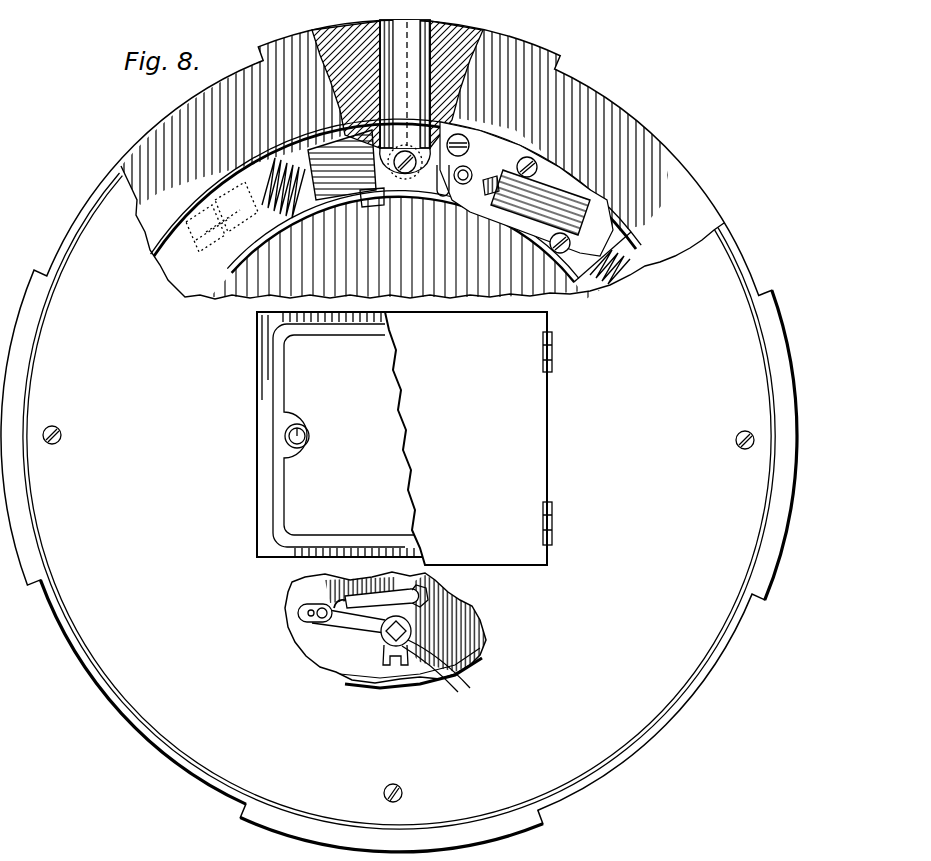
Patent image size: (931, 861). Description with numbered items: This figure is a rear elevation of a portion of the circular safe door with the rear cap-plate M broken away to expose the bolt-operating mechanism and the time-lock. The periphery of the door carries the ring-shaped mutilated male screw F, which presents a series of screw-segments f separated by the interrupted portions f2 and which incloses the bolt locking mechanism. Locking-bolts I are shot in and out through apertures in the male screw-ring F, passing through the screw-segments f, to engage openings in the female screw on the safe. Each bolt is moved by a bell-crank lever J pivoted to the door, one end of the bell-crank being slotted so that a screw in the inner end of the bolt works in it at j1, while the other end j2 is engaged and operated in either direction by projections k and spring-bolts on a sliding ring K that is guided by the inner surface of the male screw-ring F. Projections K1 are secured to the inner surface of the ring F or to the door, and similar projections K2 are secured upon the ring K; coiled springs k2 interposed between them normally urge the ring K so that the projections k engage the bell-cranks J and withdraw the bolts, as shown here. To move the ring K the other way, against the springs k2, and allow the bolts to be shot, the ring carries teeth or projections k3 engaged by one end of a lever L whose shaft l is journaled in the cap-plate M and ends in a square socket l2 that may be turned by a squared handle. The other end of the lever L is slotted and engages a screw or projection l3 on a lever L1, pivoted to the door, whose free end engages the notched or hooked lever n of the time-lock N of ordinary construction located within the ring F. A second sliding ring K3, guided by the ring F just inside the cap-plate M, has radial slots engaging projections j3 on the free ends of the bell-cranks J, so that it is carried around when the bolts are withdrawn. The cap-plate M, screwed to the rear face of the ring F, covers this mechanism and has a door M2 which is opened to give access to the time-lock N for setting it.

The screw-segments f is at (548, 72).
The interrupted portions f2 is at (135, 760).
The mutilated male screw F is at (422, 164).
The locking-bolts I is at (416, 101).
The bell-crank levers J is at (437, 162).
The slotted end connection j1 is at (400, 176).
The other ends of bell-cranks j2 is at (468, 178).
The projections j3 is at (462, 185).
The sliding ring K is at (546, 238).
The projections K1 is at (618, 238).
The projections K2 is at (318, 202).
The sliding ring K3 is at (217, 231).
The projections k is at (440, 172).
The coiled springs k2 is at (275, 170).
The teeth or projections k3 is at (400, 665).
The rear cap-plate M is at (301, 434).
The door M2 is at (468, 438).
The time-lock N is at (344, 435).
The lever L is at (358, 620).
The lever L1 is at (366, 603).
The shaft l is at (413, 643).
The square socket l2 is at (411, 631).
The screw or projection l3 is at (324, 616).
The lever of time-lock n is at (421, 591).